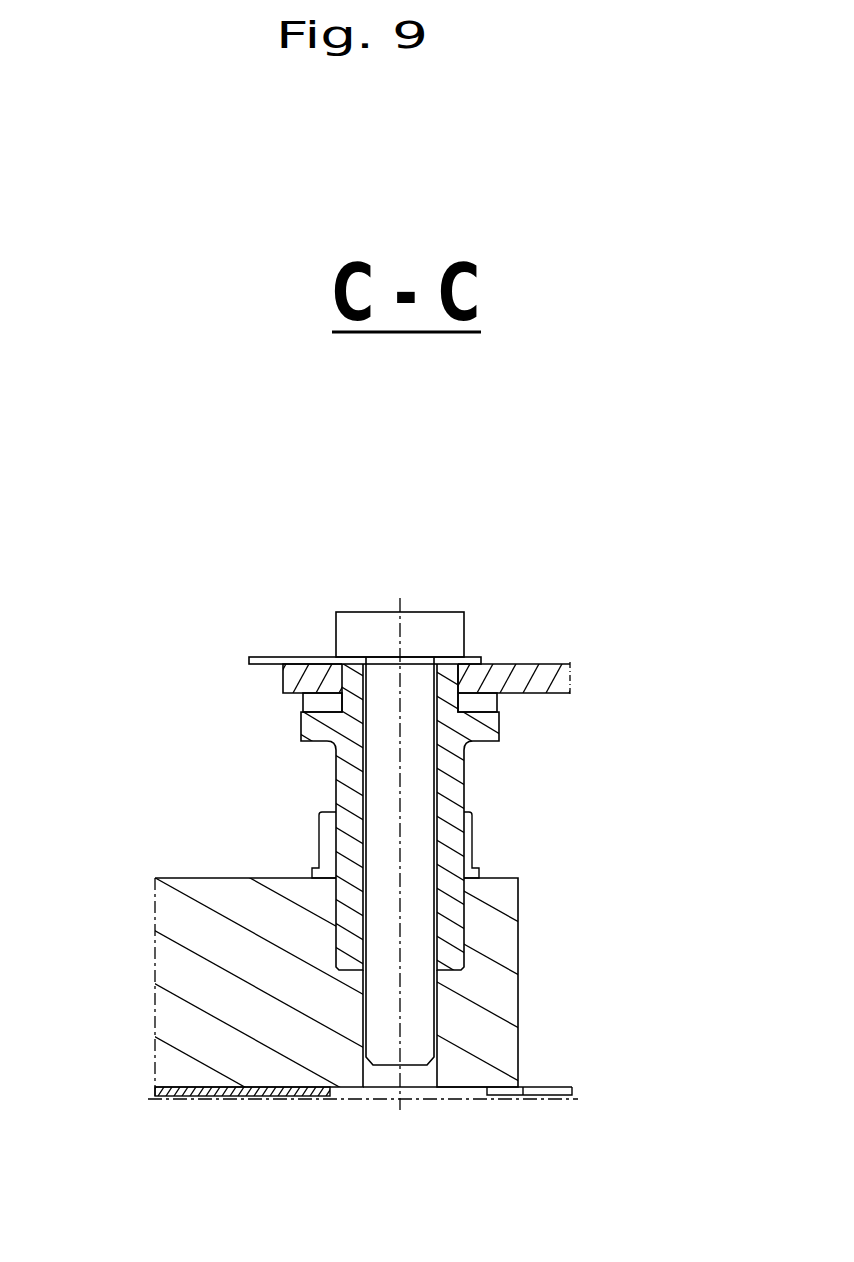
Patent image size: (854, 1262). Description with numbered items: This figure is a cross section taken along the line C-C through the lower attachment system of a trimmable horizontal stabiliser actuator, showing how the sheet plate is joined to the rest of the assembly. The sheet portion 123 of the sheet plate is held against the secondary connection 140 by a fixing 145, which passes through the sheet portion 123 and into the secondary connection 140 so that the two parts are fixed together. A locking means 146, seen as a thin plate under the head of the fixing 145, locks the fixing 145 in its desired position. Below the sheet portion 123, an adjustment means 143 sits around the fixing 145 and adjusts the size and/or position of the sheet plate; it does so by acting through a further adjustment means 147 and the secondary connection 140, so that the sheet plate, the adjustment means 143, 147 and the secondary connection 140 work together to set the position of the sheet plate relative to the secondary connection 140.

The sheet portion 123 is at (558, 660).
The secondary connection 140 is at (518, 1033).
The adjustment means 143 is at (298, 703).
The fixing 145 is at (383, 610).
The locking means 146 is at (263, 657).
The adjustment means 147 is at (467, 792).